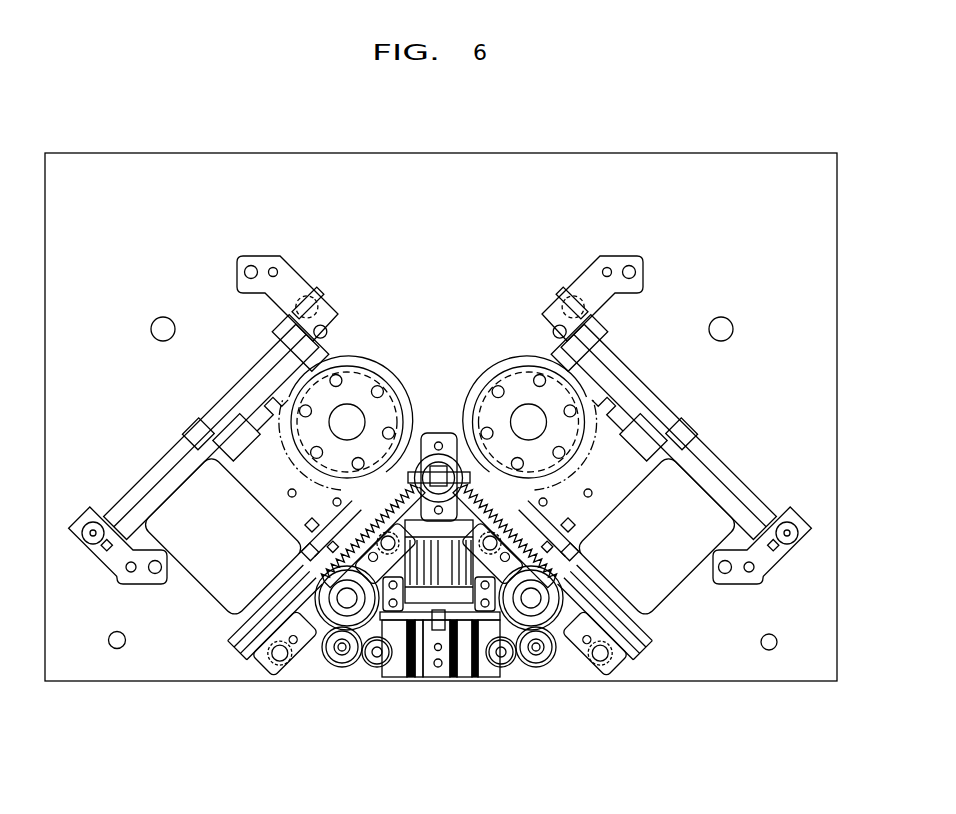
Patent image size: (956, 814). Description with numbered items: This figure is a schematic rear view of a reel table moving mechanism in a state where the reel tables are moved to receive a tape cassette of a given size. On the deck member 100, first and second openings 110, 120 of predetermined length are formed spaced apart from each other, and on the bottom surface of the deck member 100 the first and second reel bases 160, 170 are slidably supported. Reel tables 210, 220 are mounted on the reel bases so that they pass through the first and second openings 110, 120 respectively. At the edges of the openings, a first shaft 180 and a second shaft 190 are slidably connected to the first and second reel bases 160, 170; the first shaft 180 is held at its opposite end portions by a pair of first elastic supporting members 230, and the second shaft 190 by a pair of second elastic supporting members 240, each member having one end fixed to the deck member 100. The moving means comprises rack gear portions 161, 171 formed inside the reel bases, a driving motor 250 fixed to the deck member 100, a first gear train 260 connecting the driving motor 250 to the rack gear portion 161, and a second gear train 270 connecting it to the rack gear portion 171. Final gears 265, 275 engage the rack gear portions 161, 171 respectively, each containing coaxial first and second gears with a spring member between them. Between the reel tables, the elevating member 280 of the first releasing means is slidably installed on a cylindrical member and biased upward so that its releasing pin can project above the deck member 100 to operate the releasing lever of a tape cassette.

The deck member 100 is at (483, 166).
The first opening 110 is at (205, 574).
The second opening 120 is at (668, 580).
The first reel base 160 is at (291, 538).
The rack gear portion 161 is at (382, 530).
The second reel base 170 is at (643, 483).
The rack gear portion 171 is at (439, 494).
The first shaft 180 is at (143, 484).
The second shaft 190 is at (640, 386).
The reel table 210 is at (300, 421).
The reel table 220 is at (580, 432).
The first elastic supporting member 230 is at (289, 272).
The second elastic supporting member 240 is at (622, 262).
The driving motor 250 is at (400, 677).
The first gear train 260 is at (335, 640).
The final gear 265 is at (304, 613).
The second gear train 270 is at (520, 648).
The final gear 275 is at (572, 622).
The elevating member 280 is at (439, 497).